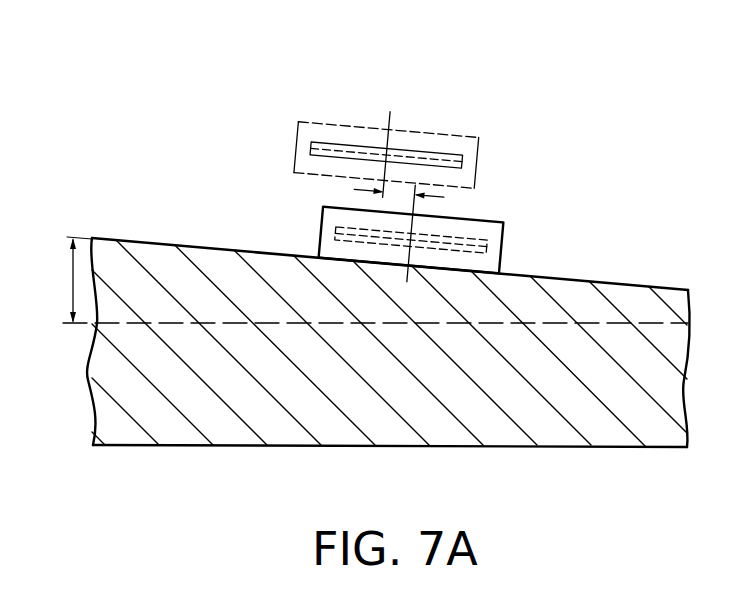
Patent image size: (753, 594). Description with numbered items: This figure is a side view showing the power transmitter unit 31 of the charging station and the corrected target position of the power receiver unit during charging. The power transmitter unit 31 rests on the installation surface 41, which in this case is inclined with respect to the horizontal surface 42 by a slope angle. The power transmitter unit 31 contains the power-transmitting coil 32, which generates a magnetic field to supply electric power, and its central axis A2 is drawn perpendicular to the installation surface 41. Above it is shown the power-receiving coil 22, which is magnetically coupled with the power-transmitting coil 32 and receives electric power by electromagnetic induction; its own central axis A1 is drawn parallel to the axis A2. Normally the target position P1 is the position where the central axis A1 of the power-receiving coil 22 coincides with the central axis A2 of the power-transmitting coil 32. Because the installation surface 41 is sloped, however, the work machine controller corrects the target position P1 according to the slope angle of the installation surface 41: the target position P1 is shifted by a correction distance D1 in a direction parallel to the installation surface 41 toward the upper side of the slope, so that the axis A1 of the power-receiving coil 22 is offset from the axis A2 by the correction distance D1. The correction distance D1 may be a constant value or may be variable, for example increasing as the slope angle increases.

The power-receiving coil 22 is at (445, 155).
The power transmitter unit 31 is at (321, 238).
The power-transmitting coil 32 is at (348, 225).
The installation surface 41 is at (155, 240).
The horizontal surface 42 is at (643, 322).
The target position P1 is at (345, 124).
The central axis of the power-receiving coil A1 is at (390, 139).
The central axis of the power-transmitting coil A2 is at (505, 228).
The correction distance D1 is at (397, 198).